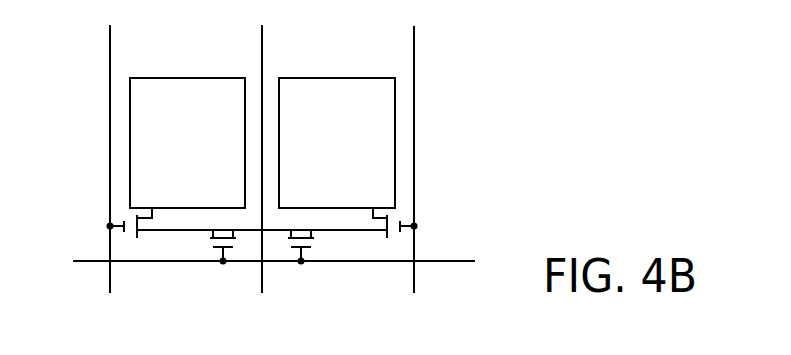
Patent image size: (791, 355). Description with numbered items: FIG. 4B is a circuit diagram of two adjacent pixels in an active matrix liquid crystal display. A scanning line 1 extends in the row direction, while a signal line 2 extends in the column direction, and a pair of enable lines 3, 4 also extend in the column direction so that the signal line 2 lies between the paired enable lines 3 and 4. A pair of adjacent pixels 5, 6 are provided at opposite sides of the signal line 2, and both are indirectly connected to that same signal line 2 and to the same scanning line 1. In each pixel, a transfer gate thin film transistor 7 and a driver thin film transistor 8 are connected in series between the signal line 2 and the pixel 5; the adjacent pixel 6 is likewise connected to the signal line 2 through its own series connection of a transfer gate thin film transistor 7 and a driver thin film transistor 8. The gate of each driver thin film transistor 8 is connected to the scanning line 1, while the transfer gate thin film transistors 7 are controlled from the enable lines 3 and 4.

The scanning line 1 is at (430, 263).
The signal line 2 is at (263, 46).
The enable line 3 is at (111, 48).
The enable line 4 is at (415, 55).
The pixel 5 is at (153, 132).
The pixel 6 is at (375, 112).
The transfer gate thin film transistor 7 is at (120, 206).
The driver thin film transistor 8 is at (180, 252).